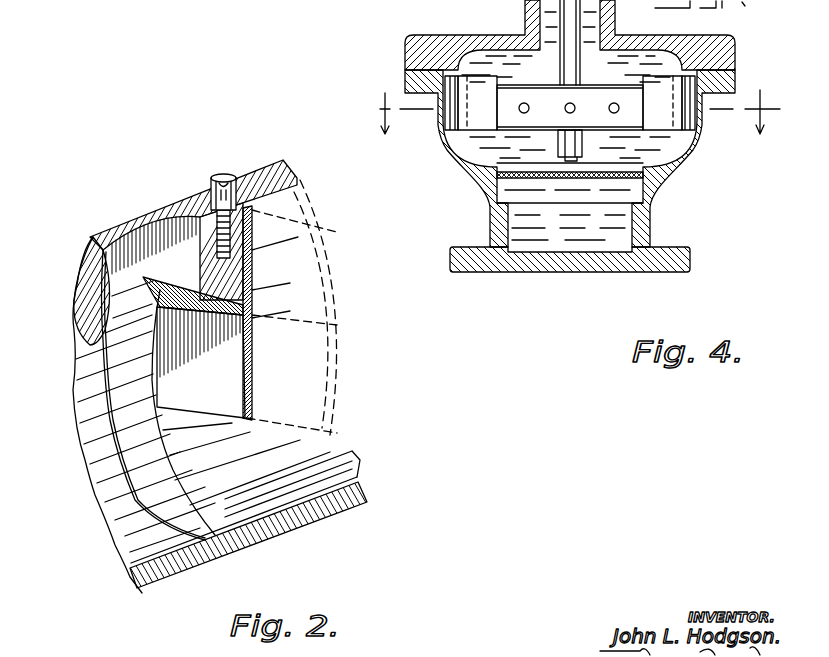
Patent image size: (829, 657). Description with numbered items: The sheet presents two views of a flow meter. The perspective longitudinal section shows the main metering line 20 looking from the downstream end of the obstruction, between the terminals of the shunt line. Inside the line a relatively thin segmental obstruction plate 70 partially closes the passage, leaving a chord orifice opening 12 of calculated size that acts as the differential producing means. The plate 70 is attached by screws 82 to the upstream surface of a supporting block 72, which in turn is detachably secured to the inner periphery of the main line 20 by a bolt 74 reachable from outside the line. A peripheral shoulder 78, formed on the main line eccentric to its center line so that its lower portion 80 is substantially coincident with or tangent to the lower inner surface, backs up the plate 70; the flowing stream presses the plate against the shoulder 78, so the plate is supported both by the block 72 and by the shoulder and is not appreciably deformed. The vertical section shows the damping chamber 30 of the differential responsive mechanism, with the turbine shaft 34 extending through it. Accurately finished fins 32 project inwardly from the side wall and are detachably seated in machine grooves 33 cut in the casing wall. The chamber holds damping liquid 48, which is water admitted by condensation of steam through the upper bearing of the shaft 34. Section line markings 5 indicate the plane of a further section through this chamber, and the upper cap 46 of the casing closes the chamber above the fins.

In FIG. 2, the chord orifice opening 12 is at (253, 477).
In FIG. 2, the main metering line 20 is at (140, 593).
In FIG. 2, the obstruction plate 70 is at (235, 356).
In FIG. 2, the supporting block 72 is at (178, 250).
In FIG. 2, the bolt 74 is at (222, 171).
In FIG. 2, the shoulder 78 is at (102, 380).
In FIG. 2, the lower portion of the shoulder 80 is at (226, 524).
In FIG. 2, the screws 82 is at (137, 218).
In FIG. 4, the damping chamber 30 is at (457, 160).
In FIG. 4, the fins 32 is at (473, 123).
In FIG. 4, the machine grooves 33 is at (468, 125).
In FIG. 4, the turbine shaft 34 is at (581, 26).
In FIG. 4, the cap 46 is at (507, 86).
In FIG. 4, the damping liquid 48 is at (626, 126).
In FIG. 4, the section line 5- 5 is at (580, 119).